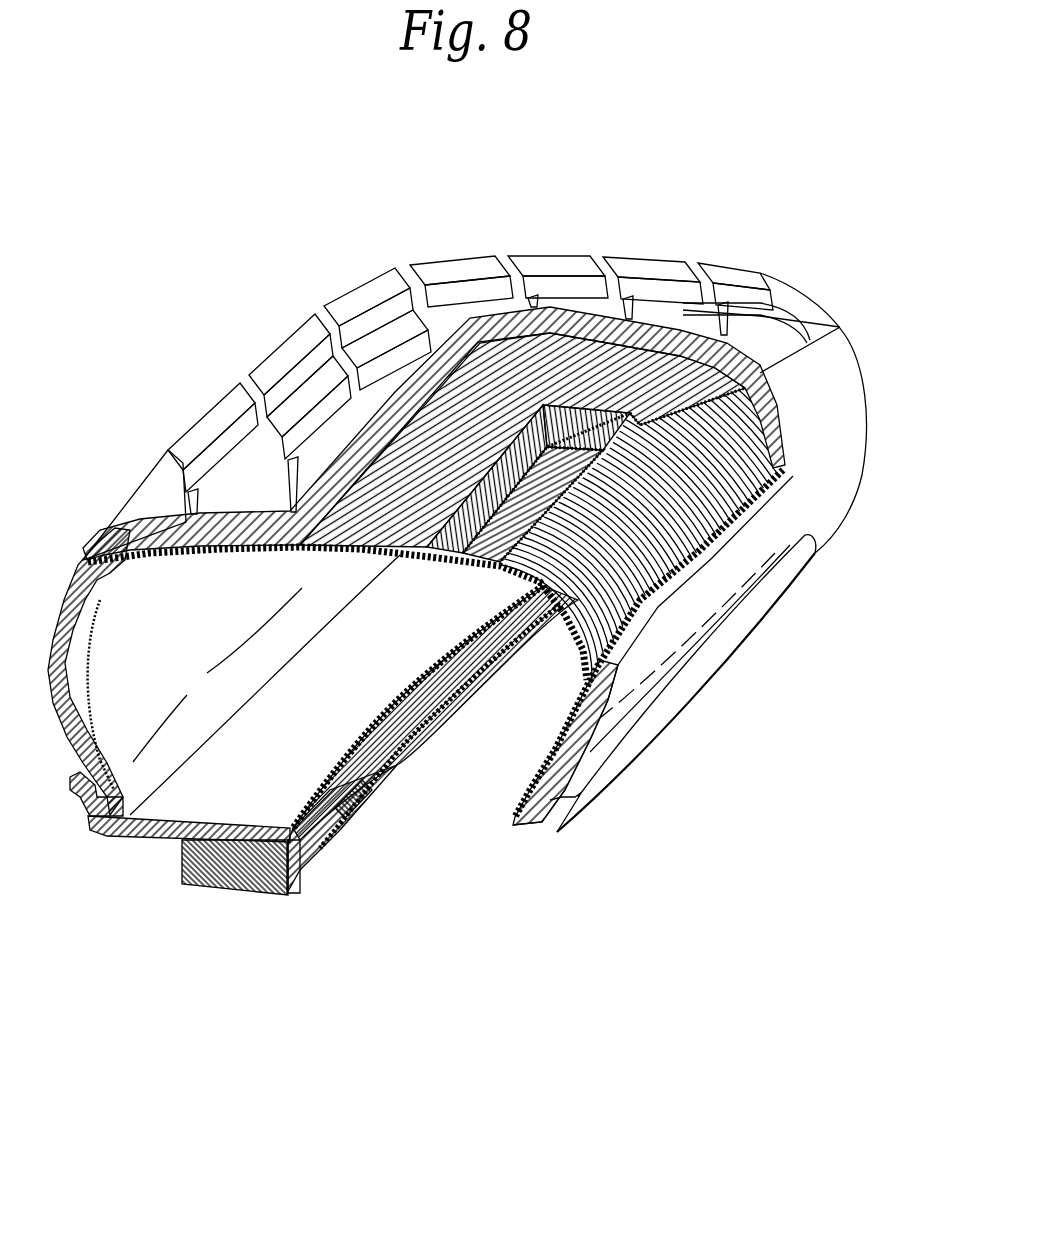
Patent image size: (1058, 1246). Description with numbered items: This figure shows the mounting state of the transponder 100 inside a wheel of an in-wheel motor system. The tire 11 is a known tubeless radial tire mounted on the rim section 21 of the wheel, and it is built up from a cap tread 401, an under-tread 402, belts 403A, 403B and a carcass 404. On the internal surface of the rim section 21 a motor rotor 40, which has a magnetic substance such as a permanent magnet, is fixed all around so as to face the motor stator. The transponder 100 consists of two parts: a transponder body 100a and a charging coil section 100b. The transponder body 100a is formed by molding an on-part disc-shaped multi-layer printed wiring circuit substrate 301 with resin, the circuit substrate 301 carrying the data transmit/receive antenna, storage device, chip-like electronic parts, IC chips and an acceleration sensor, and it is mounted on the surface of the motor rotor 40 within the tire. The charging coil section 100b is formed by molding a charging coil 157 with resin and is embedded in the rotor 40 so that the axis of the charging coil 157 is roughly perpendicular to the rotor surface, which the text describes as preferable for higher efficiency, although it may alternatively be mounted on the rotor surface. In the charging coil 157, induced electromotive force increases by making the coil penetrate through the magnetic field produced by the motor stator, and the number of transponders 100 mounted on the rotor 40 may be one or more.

The tire 11 is at (452, 222).
The cap tread 401 is at (327, 383).
The under-tread 402 is at (633, 303).
The carcass 404 is at (67, 643).
The belt 403A is at (697, 543).
The belt 403B is at (652, 590).
The charging coil section 100b is at (390, 767).
The transponder body 100a is at (373, 828).
The circuit substrate 301 is at (347, 820).
The charging coil 157 is at (290, 890).
The rim section 21 is at (128, 840).
The motor rotor 40 is at (228, 887).
The transponder 100 is at (420, 945).